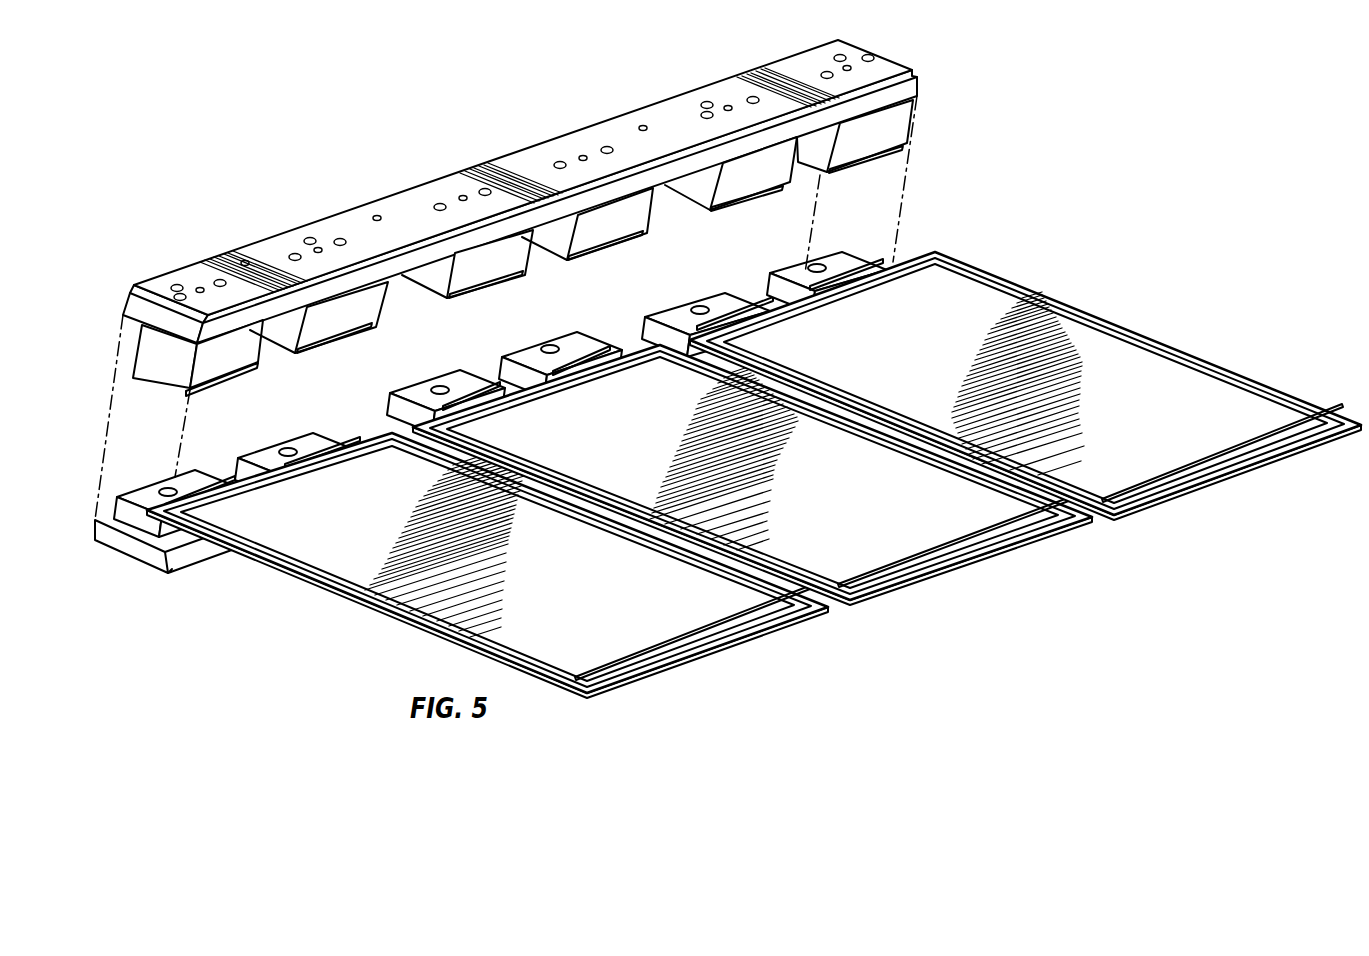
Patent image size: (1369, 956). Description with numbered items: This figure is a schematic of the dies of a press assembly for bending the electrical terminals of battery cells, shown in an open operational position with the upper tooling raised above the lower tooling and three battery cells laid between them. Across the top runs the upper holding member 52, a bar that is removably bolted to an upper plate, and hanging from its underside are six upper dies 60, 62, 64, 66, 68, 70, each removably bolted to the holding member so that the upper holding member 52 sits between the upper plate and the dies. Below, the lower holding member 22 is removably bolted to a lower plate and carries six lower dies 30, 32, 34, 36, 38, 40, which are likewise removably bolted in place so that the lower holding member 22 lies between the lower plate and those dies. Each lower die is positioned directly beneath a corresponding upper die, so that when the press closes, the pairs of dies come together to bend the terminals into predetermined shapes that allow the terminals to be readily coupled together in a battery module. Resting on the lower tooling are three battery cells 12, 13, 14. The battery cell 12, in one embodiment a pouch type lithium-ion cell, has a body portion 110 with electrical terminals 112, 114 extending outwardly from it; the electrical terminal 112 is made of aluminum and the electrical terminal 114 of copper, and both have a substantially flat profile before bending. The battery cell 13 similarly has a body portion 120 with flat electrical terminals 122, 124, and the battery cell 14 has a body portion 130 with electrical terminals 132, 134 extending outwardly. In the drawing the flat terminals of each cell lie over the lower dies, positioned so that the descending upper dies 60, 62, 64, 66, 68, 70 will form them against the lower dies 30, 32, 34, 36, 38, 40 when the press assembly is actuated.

The battery cell 12 is at (741, 626).
The battery cell 13 is at (987, 547).
The battery cell 14 is at (1265, 450).
The lower holding member 22 is at (128, 557).
The die 30 is at (147, 490).
The die 32 is at (281, 447).
The die 34 is at (420, 392).
The die 36 is at (550, 350).
The die 38 is at (681, 312).
The die 40 is at (784, 273).
The upper holding member 52 is at (272, 246).
The die 60 is at (208, 392).
The die 62 is at (325, 350).
The die 64 is at (480, 296).
The die 66 is at (594, 258).
The die 68 is at (742, 206).
The die 70 is at (846, 170).
The body portion 110 is at (676, 628).
The electrical terminal 112 is at (199, 484).
The electrical terminal 114 is at (318, 452).
The body portion 120 is at (921, 545).
The electrical terminal 122 is at (463, 388).
The electrical terminal 124 is at (586, 347).
The body portion 130 is at (1197, 448).
The electrical terminal 132 is at (731, 307).
The electrical terminal 134 is at (872, 262).